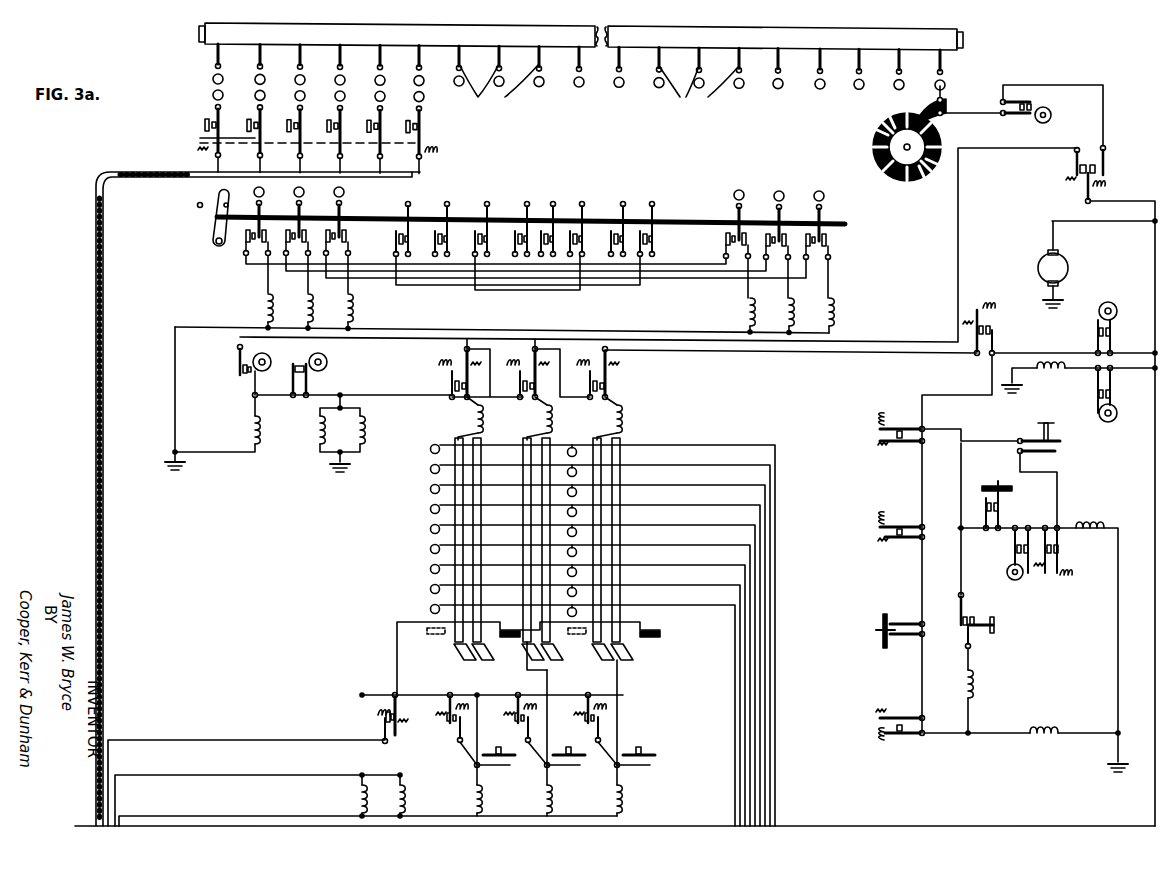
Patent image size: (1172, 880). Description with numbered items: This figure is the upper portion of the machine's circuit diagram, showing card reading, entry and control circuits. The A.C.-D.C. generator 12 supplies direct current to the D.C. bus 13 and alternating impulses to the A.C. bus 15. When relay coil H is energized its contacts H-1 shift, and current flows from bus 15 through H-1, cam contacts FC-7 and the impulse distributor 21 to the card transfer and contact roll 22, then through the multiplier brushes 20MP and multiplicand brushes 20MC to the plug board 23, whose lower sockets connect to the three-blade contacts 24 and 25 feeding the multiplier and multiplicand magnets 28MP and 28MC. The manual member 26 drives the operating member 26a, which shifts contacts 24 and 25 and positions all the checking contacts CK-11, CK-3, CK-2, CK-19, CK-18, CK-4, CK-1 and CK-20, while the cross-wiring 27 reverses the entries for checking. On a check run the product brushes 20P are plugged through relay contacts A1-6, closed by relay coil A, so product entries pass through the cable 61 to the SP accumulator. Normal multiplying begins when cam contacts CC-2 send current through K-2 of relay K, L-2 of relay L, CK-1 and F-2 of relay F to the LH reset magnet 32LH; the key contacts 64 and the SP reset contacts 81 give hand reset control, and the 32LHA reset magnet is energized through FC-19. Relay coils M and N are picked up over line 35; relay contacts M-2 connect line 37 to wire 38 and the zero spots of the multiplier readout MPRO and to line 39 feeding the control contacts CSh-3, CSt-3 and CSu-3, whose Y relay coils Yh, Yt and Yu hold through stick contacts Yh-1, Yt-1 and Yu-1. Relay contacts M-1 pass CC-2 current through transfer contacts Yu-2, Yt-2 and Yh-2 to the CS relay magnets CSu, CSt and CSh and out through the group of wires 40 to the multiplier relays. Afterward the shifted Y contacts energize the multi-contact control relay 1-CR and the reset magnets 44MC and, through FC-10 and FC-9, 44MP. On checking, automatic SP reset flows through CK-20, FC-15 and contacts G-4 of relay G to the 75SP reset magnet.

The card transfer and contact roll 22 is at (946, 42).
The product brushes 20P is at (217, 56).
The plug board 23 is at (243, 83).
The multiplier brushes 20MP is at (496, 89).
The multiplicand brushes 20MC is at (688, 90).
The relay contacts A-1 to 6 A1-6 is at (208, 138).
The relay coil A is at (422, 156).
The cable 61 is at (95, 405).
The manual member 26 is at (212, 229).
The operating member 26a is at (712, 227).
The checking contacts CK-11 is at (428, 197).
The checking contacts CK-3 is at (455, 213).
The checking contacts CK-2 is at (490, 213).
The checking contacts CK-19 is at (550, 213).
The checking contacts CK-18 is at (575, 213).
The checking contacts CK-4 is at (627, 213).
The supplemental checking contacts CK-1 is at (660, 216).
The three-blade contacts 25 is at (822, 249).
The three-blade contacts 24 is at (286, 257).
The cross-wiring 27 is at (574, 271).
The checking contacts CK-20 is at (793, 513).
The multiplier magnets 28MP is at (352, 309).
The multiplicand magnets 28MC is at (835, 312).
The cam contacts FC-9 is at (245, 376).
The cam contacts FC-10 is at (308, 386).
The reset magnets 44MP is at (250, 427).
The reset magnet 44MC is at (318, 429).
The multi-contact control relay 1-CR is at (364, 435).
The hundreds Y relay coil Yh is at (450, 357).
The transfer contacts Yh-2 is at (452, 387).
The tens Y relay coil Yt is at (520, 359).
The transfer contacts Yt-2 is at (563, 388).
The units Y relay coil Yu is at (590, 359).
The transfer contacts Yu-2 is at (592, 390).
The hundreds CS relay magnet CSh is at (473, 419).
The tens CS relay magnet CSt is at (542, 419).
The units CS relay magnet CSu is at (624, 419).
The multiplier readout MPRO is at (570, 632).
The group of wires 40 is at (757, 698).
The wire 38 is at (400, 622).
The line 39 is at (399, 690).
The line 37 is at (192, 741).
The line 35 is at (167, 771).
The D.C. bus 13 is at (246, 813).
The relay coil M is at (987, 319).
The relay contacts M-1 is at (996, 347).
The relay contacts M-2 is at (397, 727).
The relay coil N is at (400, 785).
The control contacts CSh-3 is at (456, 747).
The control contacts CSt-3 is at (525, 736).
The control contacts CSu-3 is at (612, 741).
The stick contacts Yh-1 is at (492, 768).
The stick contacts Yt-1 is at (560, 768).
The stick contacts Yu-1 is at (630, 768).
The impulse distributor 21 is at (905, 157).
The cam contacts FC-7 is at (1018, 105).
The relay coil H is at (1110, 185).
The relay contacts H-1 is at (1075, 164).
The A.C.-D.C. generator 12 is at (1038, 269).
The A.C. bus 15 is at (1153, 267).
The cam contacts CC-2 is at (1104, 349).
The reset magnet 32LHA is at (1048, 378).
The cam contacts FC-19 is at (1114, 391).
The relay coil K is at (890, 415).
The relay contacts K-2 is at (908, 444).
The SP reset contacts 81 is at (1060, 447).
The relay coil L is at (876, 516).
The relay contacts L-2 is at (910, 540).
The SP reset magnet 75SP is at (1098, 524).
The cam contacts FC-15 is at (1012, 566).
The relay contacts G-4 is at (1062, 542).
The relay coil G is at (1068, 577).
The LH accumulator reset key contacts 64 is at (975, 637).
The magnet U is at (977, 687).
The LH reset magnet 32LH is at (1058, 723).
The relay coil F is at (876, 747).
The relay contacts F-2 is at (918, 741).